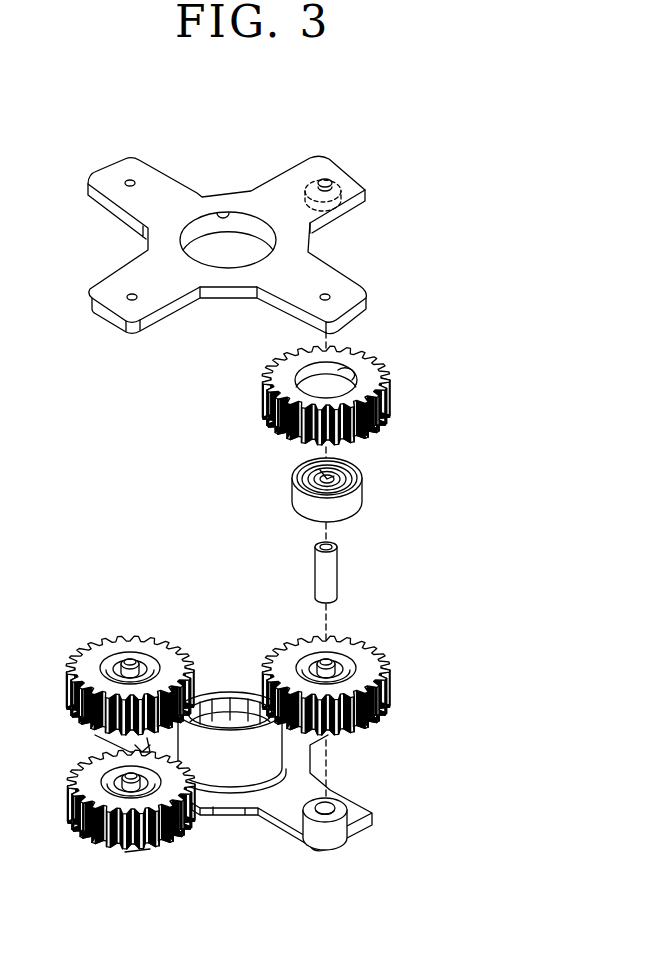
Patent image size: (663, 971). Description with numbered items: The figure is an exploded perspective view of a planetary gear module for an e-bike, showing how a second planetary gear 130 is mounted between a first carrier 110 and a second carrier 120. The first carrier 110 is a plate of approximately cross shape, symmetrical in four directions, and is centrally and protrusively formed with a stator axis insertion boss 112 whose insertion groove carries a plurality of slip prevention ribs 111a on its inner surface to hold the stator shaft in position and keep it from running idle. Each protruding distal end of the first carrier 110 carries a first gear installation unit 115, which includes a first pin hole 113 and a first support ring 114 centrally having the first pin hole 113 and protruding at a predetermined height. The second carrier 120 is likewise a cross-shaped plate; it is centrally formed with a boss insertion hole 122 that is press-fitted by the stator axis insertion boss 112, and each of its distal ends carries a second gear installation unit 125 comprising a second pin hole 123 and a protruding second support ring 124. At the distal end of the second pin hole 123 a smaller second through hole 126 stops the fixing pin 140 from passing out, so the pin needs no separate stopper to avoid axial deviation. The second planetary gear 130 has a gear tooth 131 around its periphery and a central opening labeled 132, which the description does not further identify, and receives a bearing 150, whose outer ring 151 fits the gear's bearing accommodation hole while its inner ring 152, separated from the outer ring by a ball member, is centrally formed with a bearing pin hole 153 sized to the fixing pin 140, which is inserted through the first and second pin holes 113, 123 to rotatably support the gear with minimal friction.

The first carrier 110 is at (277, 814).
The slip prevention ribs 111a is at (222, 716).
The stator axis insertion boss 112 is at (230, 743).
The first pin hole 113 is at (308, 851).
The first support ring 114 is at (338, 822).
The first gear installation unit 115 is at (326, 868).
The second carrier 120 is at (338, 160).
The boss insertion hole 122 is at (223, 213).
The second pin hole 123 is at (332, 188).
The second support ring 124 is at (341, 198).
The second gear installation unit 125 is at (392, 195).
The second through hole 126 is at (131, 180).
The second planetary gear 130 is at (385, 395).
The gear tooth 131 is at (373, 405).
The shaft hole 132 is at (346, 381).
The fixing pin 140 is at (328, 567).
The bearing 150 is at (357, 481).
The outer ring 151 is at (358, 480).
The inner ring 152 is at (334, 474).
The bearing pin hole 153 is at (318, 477).